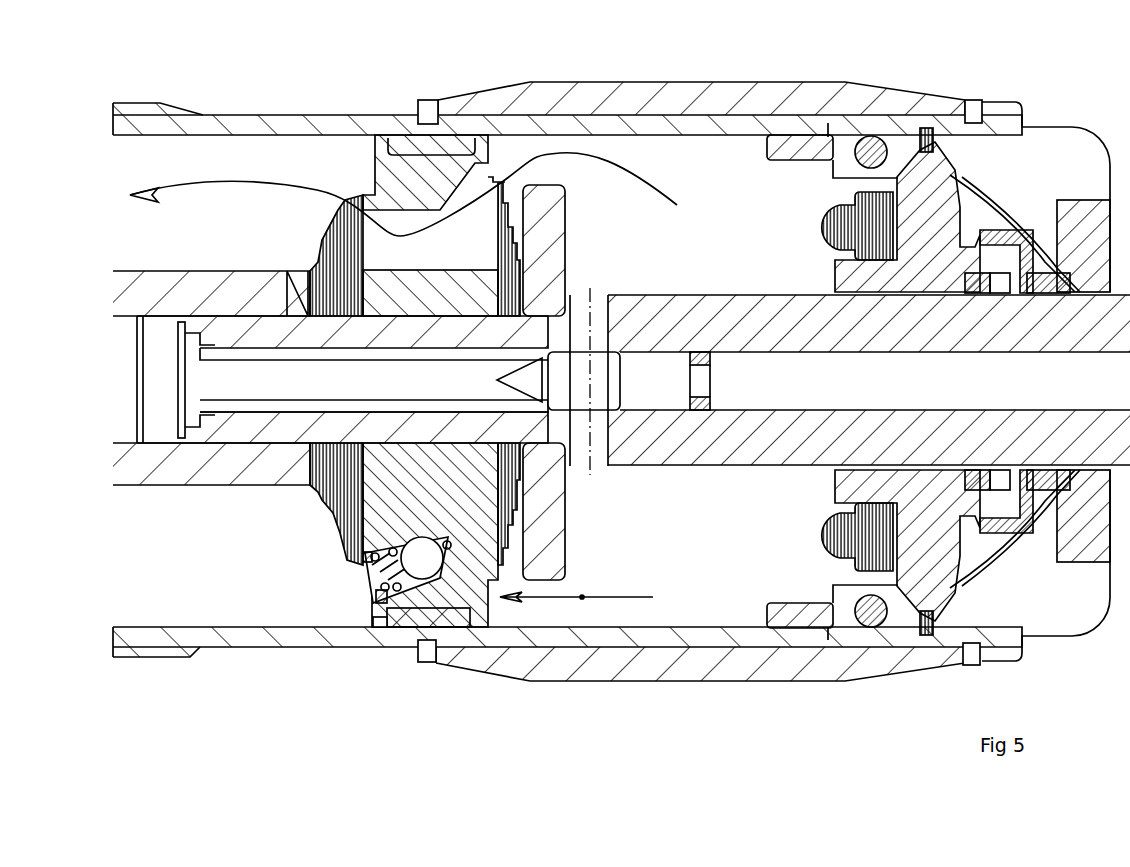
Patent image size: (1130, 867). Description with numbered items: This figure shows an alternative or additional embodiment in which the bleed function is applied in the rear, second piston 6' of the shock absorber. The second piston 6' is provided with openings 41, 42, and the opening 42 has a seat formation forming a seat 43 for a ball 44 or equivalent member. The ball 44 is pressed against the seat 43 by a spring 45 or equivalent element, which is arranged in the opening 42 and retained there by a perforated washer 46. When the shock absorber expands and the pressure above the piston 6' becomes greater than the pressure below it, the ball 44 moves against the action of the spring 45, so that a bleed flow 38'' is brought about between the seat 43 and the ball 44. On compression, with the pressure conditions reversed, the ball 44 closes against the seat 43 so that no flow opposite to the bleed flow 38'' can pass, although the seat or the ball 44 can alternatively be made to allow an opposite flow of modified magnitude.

The second piston 6' is at (434, 164).
The bleed flow 38'' is at (611, 400).
The opening 41 is at (488, 590).
The opening 42 is at (380, 600).
The seat 43 is at (473, 570).
The ball 44 is at (422, 558).
The spring 45 is at (372, 560).
The washer 46 is at (370, 627).